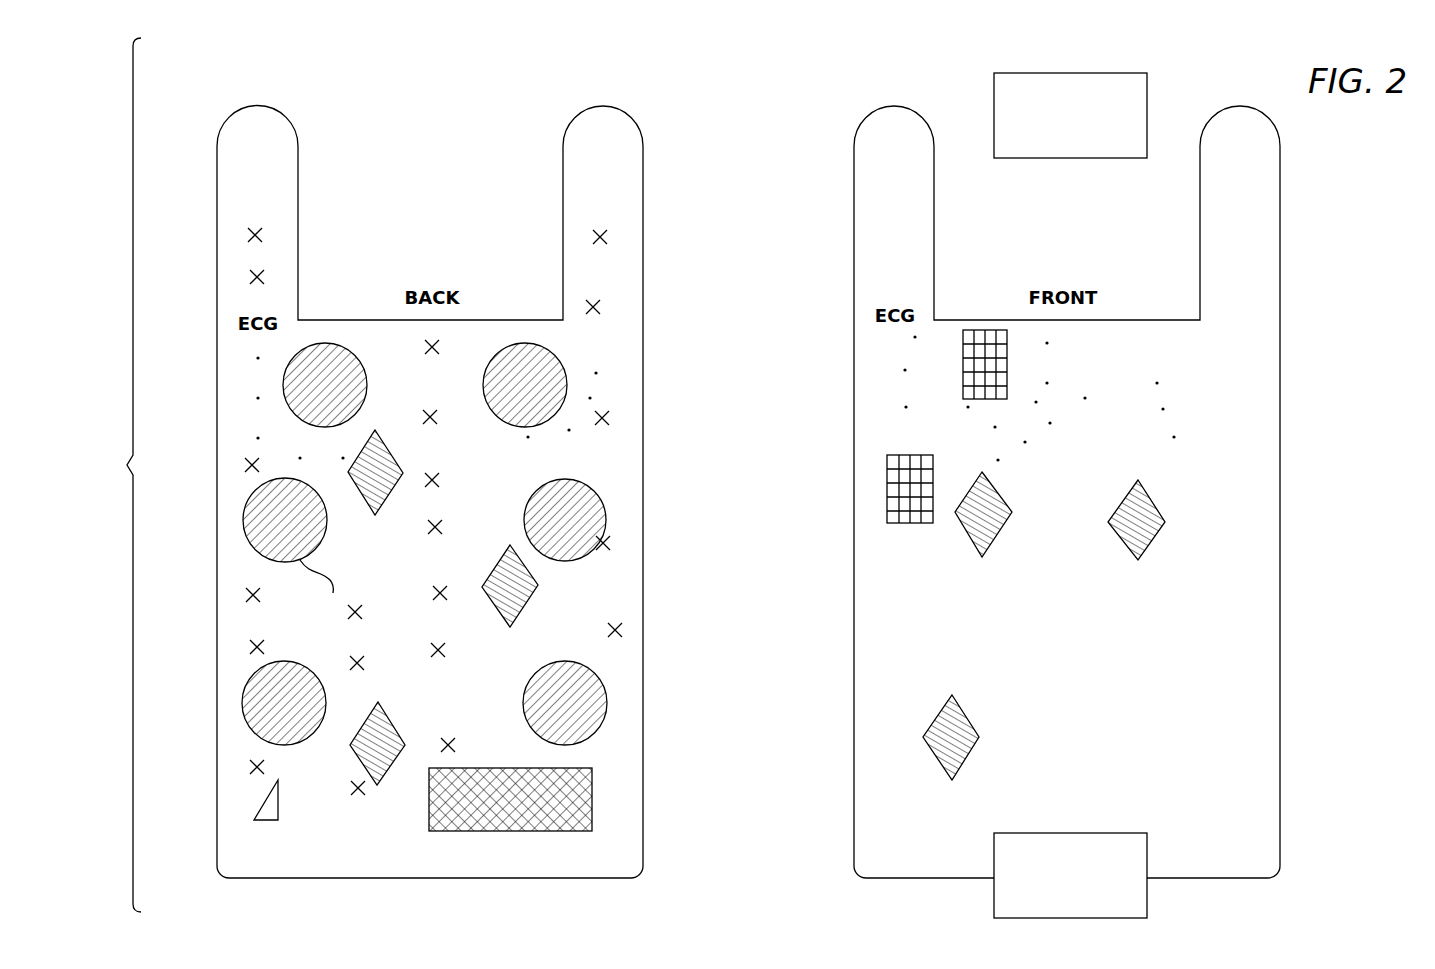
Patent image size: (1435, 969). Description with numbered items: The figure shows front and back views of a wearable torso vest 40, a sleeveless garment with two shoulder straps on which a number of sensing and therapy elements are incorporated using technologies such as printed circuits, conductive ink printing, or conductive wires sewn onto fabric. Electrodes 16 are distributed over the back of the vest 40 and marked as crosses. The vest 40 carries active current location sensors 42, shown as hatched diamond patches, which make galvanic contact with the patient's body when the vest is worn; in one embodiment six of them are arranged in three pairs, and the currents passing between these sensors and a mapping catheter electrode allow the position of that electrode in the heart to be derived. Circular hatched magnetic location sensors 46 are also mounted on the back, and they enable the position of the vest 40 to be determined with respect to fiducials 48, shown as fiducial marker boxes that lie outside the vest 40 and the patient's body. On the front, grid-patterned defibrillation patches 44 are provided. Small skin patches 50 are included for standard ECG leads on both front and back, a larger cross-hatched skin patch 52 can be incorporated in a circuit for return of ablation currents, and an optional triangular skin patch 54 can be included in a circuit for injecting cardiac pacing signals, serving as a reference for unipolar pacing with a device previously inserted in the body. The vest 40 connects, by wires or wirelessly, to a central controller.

The wearable torso vest 40 is at (245, 73).
The electrodes 16 is at (262, 236).
The magnetic location sensors 46 is at (312, 396).
The active current location sensors 42 is at (495, 560).
The skin patches for standard ECG leads 50 is at (258, 358).
The skin patch for return of ablation currents 52 is at (592, 795).
The skin patch for injecting cardiac pacing signals 54 is at (268, 793).
The defibrillation patches 44 is at (975, 330).
The fiducials 48 is at (1075, 158).